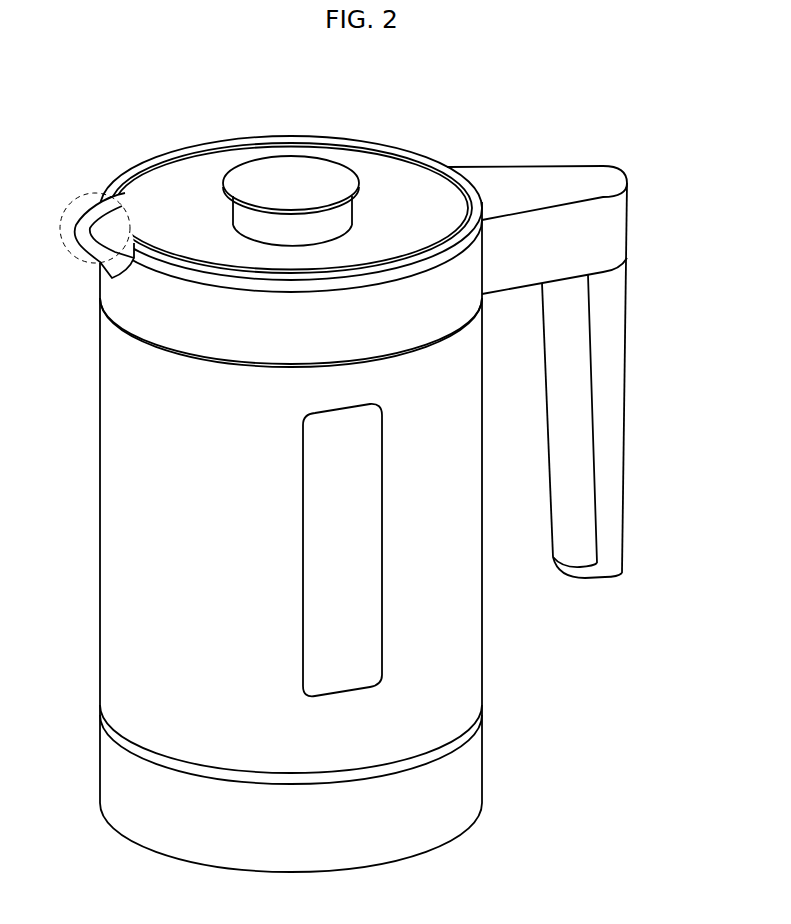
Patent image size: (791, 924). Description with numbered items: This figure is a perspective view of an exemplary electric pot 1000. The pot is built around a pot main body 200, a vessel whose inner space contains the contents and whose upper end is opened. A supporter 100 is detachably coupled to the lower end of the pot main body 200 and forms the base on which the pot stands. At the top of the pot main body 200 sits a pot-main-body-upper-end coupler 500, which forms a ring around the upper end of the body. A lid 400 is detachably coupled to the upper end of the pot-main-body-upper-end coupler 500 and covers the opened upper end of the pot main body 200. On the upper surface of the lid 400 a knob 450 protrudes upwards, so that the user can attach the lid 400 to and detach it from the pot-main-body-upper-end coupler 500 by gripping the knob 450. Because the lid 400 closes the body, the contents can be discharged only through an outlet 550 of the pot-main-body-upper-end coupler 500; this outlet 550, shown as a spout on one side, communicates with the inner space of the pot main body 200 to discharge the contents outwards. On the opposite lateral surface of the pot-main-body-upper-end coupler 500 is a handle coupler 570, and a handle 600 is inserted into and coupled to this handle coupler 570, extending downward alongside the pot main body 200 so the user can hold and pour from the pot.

The electric pot 1000 is at (78, 85).
The supporter 100 is at (472, 777).
The pot main body 200 is at (108, 473).
The lid 400 is at (205, 177).
The knob 450 is at (298, 165).
The pot-main-body-upper-end coupler 500 is at (365, 322).
The outlet 550 is at (75, 195).
The handle coupler 570 is at (552, 178).
The handle 600 is at (613, 395).